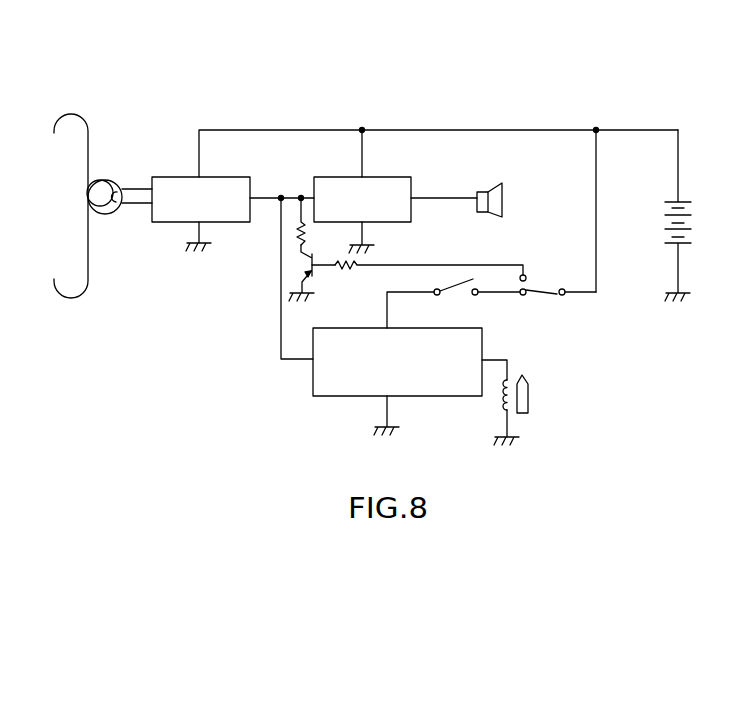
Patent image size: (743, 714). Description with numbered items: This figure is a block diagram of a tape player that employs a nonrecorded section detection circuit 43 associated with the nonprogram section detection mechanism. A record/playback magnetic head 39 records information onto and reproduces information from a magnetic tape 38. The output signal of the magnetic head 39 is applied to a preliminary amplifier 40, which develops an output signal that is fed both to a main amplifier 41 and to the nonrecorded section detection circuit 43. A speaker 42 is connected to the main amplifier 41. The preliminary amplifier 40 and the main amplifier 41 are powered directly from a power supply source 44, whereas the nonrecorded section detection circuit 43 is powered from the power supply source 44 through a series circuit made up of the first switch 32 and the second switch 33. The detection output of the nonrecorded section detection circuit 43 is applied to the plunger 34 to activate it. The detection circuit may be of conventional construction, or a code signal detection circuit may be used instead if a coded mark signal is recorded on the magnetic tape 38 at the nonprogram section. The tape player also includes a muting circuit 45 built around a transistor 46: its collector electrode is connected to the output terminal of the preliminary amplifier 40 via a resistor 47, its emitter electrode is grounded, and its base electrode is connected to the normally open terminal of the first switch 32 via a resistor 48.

The first switch 32 is at (542, 293).
The second switch 33 is at (460, 282).
The plunger 34 is at (529, 394).
The magnetic tape 38 is at (90, 148).
The record/playback magnetic head 39 is at (117, 179).
The preliminary amplifier 40 is at (185, 177).
The main amplifier 41 is at (383, 177).
The speaker 42 is at (508, 187).
The nonrecorded section detection circuit 43 is at (435, 397).
The power supply source 44 is at (690, 213).
The muting circuit 45 is at (318, 280).
The transistor 46 is at (311, 263).
The resistor 47 is at (305, 237).
The resistor 48 is at (342, 267).